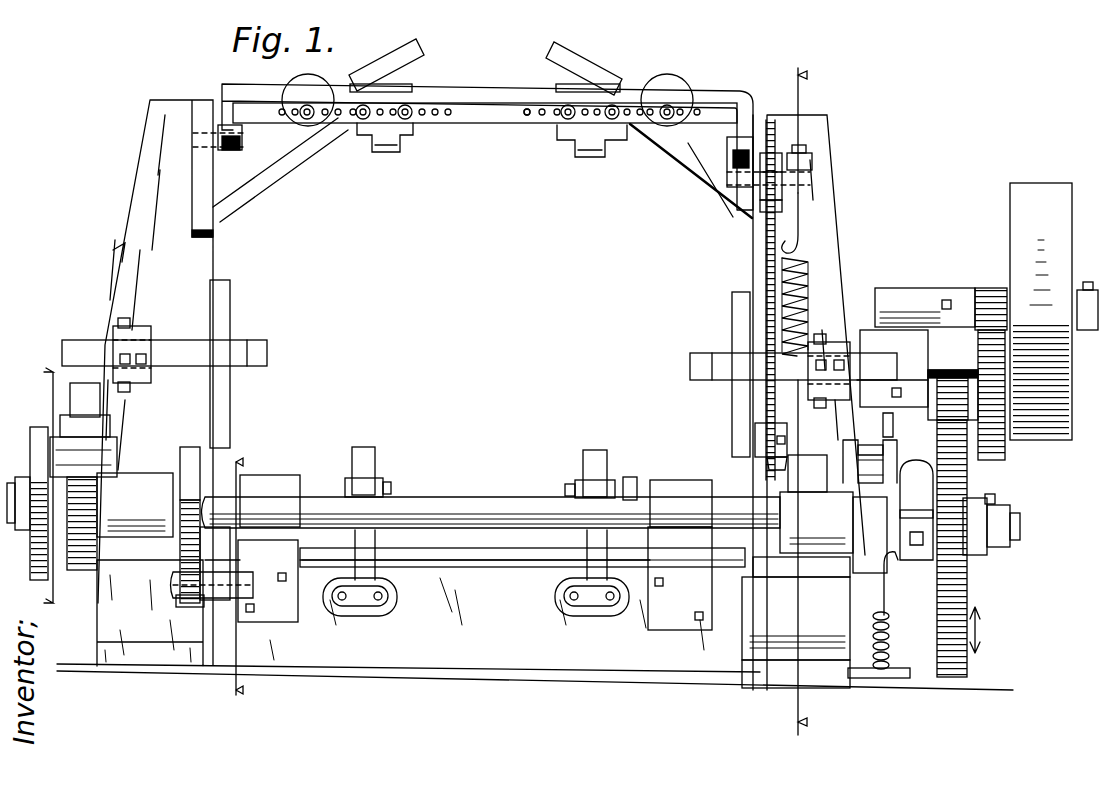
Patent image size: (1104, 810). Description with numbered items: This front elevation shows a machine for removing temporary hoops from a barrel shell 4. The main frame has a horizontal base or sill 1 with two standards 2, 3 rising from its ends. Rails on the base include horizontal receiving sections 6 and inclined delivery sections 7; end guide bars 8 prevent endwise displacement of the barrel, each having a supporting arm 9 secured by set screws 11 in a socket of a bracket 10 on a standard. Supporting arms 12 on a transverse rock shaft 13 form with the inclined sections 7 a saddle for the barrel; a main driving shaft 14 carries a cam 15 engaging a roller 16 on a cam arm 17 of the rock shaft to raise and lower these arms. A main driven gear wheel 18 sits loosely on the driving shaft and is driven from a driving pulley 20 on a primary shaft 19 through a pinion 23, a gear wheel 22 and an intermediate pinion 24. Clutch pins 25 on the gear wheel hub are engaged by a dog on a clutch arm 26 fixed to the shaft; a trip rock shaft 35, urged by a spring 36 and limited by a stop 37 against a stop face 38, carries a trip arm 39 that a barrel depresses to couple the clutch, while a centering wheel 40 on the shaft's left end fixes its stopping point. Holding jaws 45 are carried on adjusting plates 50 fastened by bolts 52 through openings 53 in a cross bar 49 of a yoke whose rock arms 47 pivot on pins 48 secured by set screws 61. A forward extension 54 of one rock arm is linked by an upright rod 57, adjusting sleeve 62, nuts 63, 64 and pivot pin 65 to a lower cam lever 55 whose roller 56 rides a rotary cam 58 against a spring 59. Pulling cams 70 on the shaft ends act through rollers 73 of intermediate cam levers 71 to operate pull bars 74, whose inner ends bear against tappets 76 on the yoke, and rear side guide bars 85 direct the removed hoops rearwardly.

The base or sill 1 is at (510, 612).
The standard or post 2 is at (830, 228).
The standard or post 3 is at (188, 236).
The barrel shell or body 4 is at (791, 398).
The horizontal receiving sections of rails 6 is at (384, 480).
The inclined delivery sections of rails 7 is at (282, 482).
The longitudinal guide bars 8 is at (268, 352).
The supporting arm 9 is at (479, 359).
The bracket 10 is at (142, 340).
The set screws 11 is at (142, 366).
The supporting arms 12 is at (594, 452).
The rock shaft 13 is at (481, 577).
The main driving shaft 14 is at (478, 505).
The cam 15 is at (185, 550).
The roller 16 is at (186, 606).
The cam arm 17 is at (240, 566).
The main driven gear wheel 18 is at (968, 588).
The primary shaft 19 is at (1096, 322).
The driving pulley 20 is at (1041, 311).
The gear wheel 22 is at (996, 452).
The pinion 23 is at (990, 290).
The intermediate pinion 24 is at (948, 368).
The coupling or clutch pins 25 is at (968, 564).
The driving or clutch arm 26 is at (935, 492).
The trip rock shaft 35 is at (708, 565).
The spring 36 is at (890, 638).
The stop 37 is at (888, 590).
The stop face 38 is at (870, 592).
The trip arm 39 is at (632, 478).
The centering wheel 40 is at (24, 503).
The grippers or jaws 45 is at (386, 150).
The rock arms 47 is at (230, 125).
The pivot pins 48 is at (195, 135).
The cross bar 49 is at (480, 95).
The adjusting plates 50 is at (448, 118).
The bolts 52 is at (410, 105).
The openings 53 is at (436, 118).
The forward extension (yoke-lever) 54 is at (743, 192).
The lower cam lever 55 is at (768, 464).
The roller 56 is at (755, 438).
The upright rod 57 is at (766, 275).
The rotary cam 58 is at (790, 490).
The spring 59 is at (814, 280).
The set screws 61 is at (224, 150).
The adjusting sleeve 62 is at (785, 184).
The screw nut 63 is at (812, 160).
The screw nut 64 is at (762, 208).
The pivot pin 65 is at (732, 182).
The pulling cams 70 is at (832, 565).
The intermediate cam levers 71 is at (70, 400).
The roller 73 is at (822, 520).
The pull bars or rods 74 is at (296, 138).
The tappet 76 is at (314, 84).
The rear side guide bars 85 is at (232, 305).